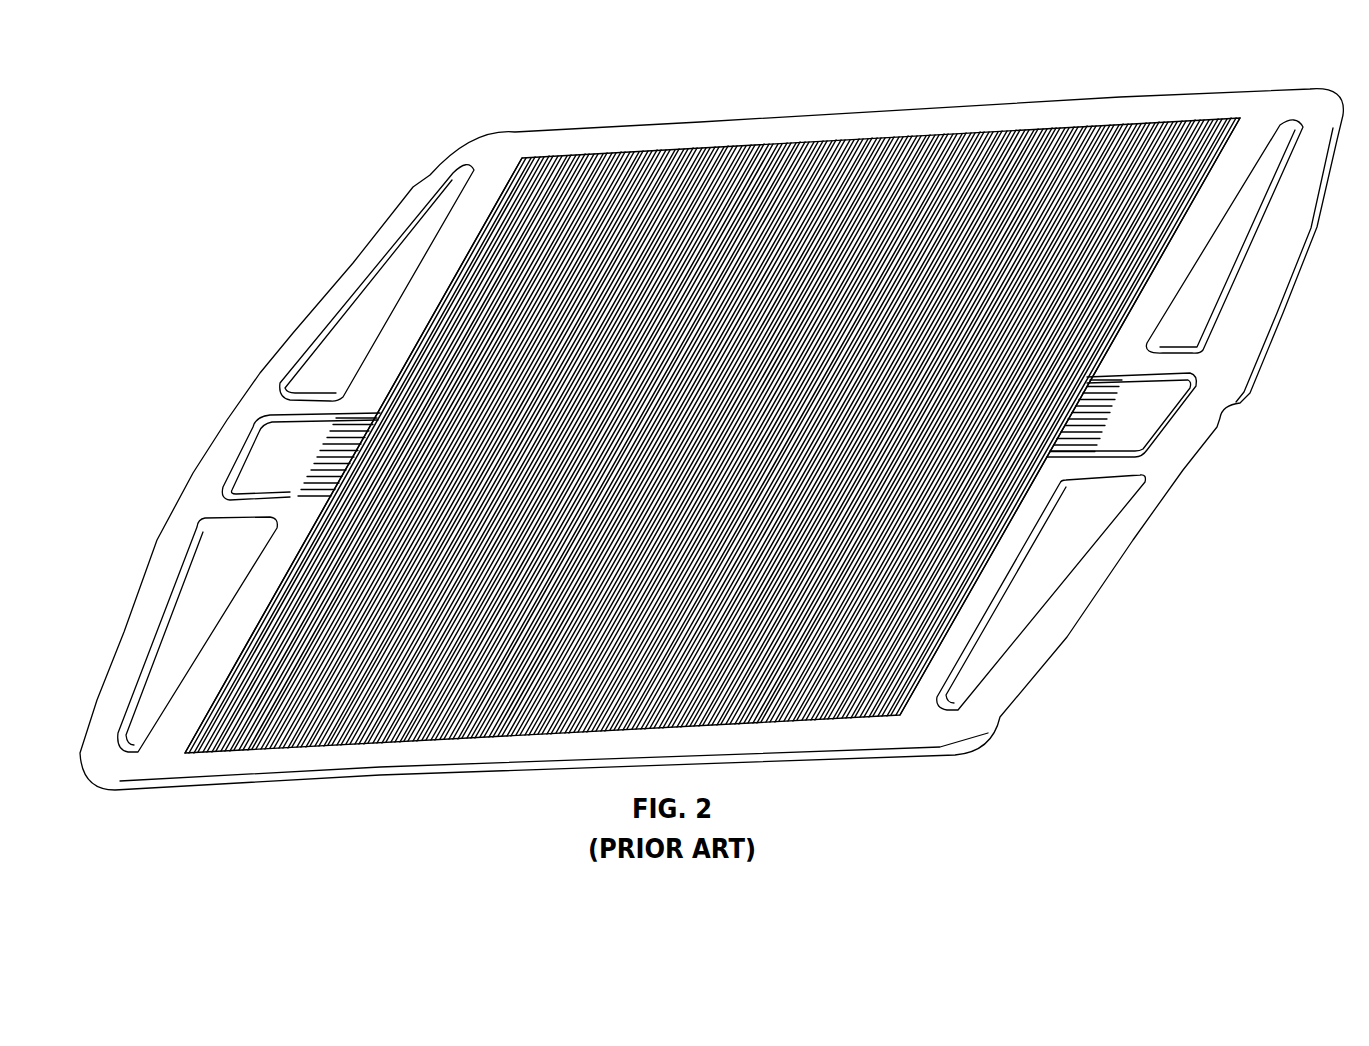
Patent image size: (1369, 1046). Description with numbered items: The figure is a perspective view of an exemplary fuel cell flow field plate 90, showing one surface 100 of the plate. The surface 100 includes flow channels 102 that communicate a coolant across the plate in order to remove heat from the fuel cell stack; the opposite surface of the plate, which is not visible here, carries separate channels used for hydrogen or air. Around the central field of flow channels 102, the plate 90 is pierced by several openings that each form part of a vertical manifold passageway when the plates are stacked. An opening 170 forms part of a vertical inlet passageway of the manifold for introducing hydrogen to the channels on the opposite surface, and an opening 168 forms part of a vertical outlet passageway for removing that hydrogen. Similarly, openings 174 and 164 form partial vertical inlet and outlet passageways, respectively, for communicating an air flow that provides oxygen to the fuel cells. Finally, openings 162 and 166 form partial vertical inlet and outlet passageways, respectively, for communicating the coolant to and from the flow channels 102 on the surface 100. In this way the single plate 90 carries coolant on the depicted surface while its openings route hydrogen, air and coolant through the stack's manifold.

The flow field plate 90 is at (1000, 717).
The surface 100 is at (845, 123).
The flow channels 102 is at (1033, 138).
The opening 162 is at (1147, 432).
The opening 164 is at (1053, 552).
The opening 166 is at (277, 477).
The opening 168 is at (1227, 293).
The opening 170 is at (145, 715).
The opening 174 is at (372, 315).